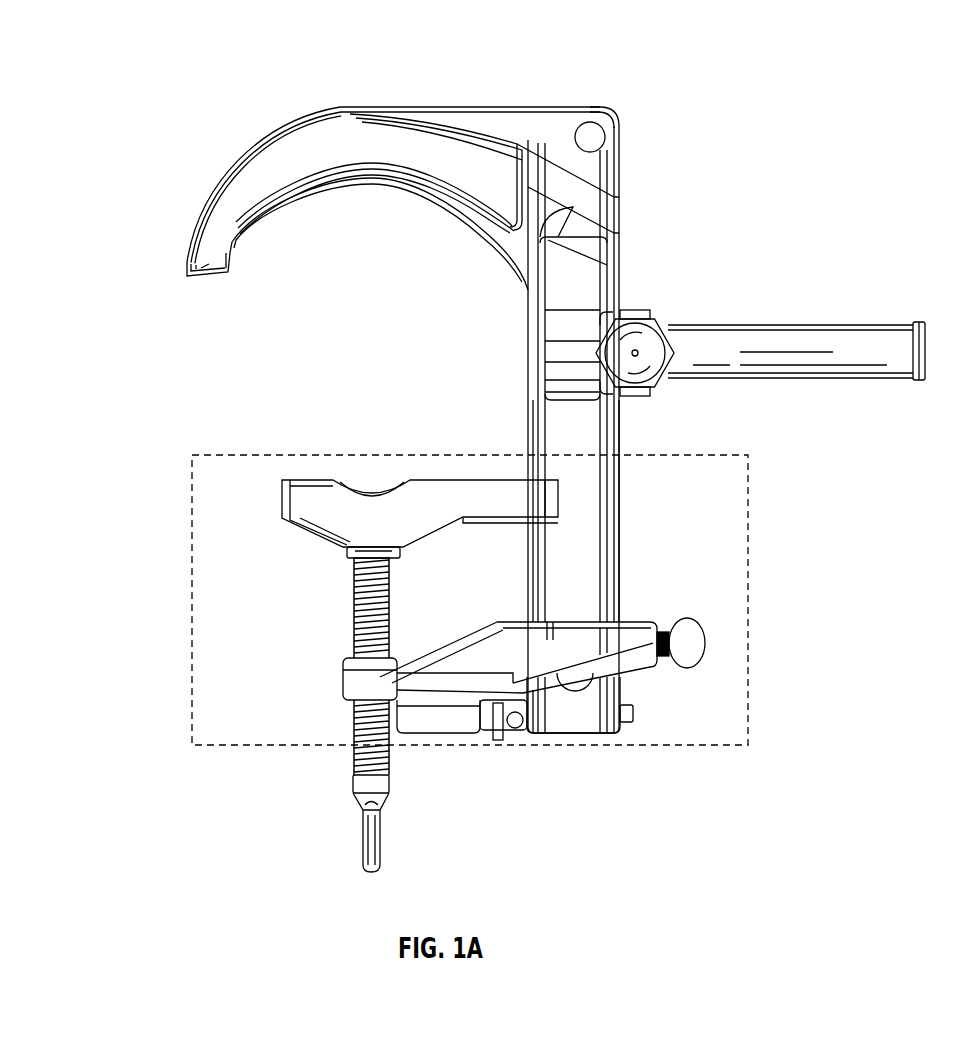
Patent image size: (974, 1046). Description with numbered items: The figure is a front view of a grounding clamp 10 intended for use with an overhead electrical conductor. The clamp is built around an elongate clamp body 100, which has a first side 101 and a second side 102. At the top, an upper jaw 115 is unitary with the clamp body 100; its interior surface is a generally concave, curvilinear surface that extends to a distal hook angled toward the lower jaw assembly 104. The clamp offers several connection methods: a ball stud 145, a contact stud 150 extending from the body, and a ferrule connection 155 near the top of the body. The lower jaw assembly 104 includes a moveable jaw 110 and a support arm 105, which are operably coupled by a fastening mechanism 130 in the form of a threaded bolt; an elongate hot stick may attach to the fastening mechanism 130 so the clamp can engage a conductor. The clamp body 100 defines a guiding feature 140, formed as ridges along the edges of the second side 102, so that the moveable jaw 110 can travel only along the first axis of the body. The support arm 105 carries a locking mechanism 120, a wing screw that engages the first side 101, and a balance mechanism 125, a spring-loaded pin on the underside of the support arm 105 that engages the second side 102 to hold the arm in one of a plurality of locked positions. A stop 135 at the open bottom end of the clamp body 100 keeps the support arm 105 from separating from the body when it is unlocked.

The grounding clamp 10 is at (354, 67).
The upper jaw 115 is at (306, 128).
The ferrule connection 155 is at (632, 227).
The second side 102 is at (528, 380).
The guiding feature 140 is at (540, 462).
The ball stud 145 is at (656, 389).
The contact stud 150 is at (841, 323).
The moveable jaw 110 is at (556, 500).
The lower jaw assembly 104 is at (188, 536).
The support arm 105 is at (658, 673).
The locking mechanism 120 is at (709, 628).
The first side 101 is at (623, 578).
The clamp body 100 is at (627, 590).
The stop 135 is at (638, 720).
The balance mechanism 125 is at (509, 748).
The fastening mechanism 130 is at (392, 818).